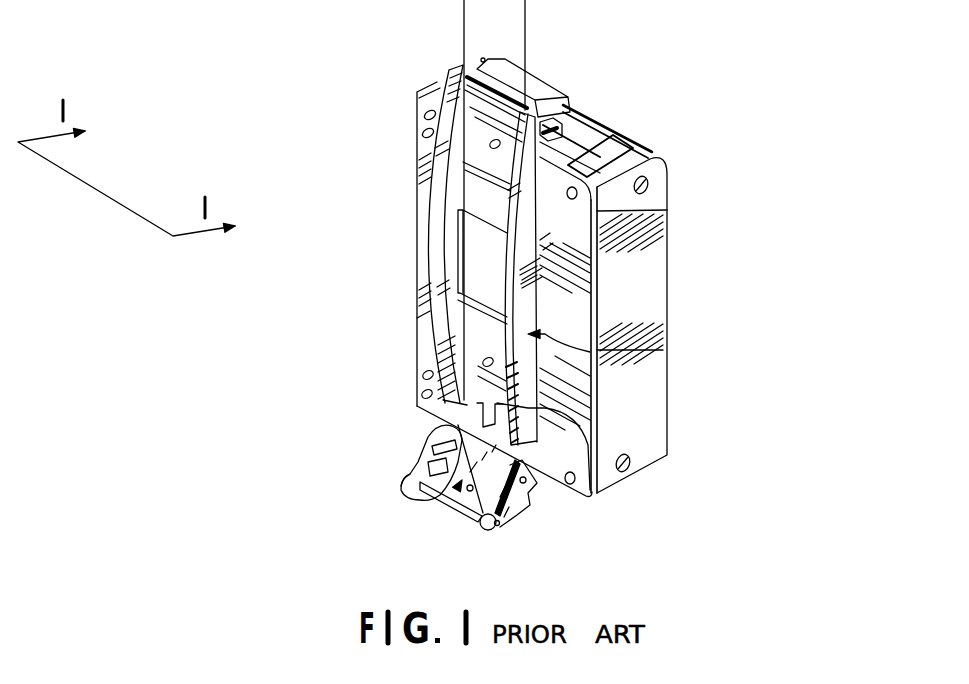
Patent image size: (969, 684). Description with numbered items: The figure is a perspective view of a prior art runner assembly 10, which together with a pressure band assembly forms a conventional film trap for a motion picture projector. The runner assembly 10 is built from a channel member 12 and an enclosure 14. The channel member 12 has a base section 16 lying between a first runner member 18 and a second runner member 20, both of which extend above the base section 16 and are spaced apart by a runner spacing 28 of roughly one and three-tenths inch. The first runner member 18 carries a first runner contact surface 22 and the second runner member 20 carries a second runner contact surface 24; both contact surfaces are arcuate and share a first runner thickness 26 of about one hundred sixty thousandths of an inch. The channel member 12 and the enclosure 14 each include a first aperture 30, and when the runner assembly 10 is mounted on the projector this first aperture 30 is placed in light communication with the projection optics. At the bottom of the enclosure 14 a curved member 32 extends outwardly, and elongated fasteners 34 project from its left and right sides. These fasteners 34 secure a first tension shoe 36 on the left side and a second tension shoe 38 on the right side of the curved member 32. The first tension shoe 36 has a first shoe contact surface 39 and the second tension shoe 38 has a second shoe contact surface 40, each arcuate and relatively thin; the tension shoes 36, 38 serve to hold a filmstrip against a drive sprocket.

The runner assembly 10 is at (770, 269).
The channel member 12 is at (663, 352).
The enclosure 14 is at (577, 138).
The base section 16 is at (417, 405).
The first runner member 18 is at (410, 158).
The second runner member 20 is at (527, 222).
The first runner contact surface 22 is at (435, 266).
The second runner contact surface 24 is at (510, 304).
The first runner thickness 26 is at (413, 313).
The runner spacing 28 is at (522, 27).
The first aperture 30 is at (475, 242).
The curved member 32 is at (453, 513).
The elongated fasteners 34 is at (428, 448).
The first tension shoe 36 is at (416, 496).
The second tension shoe 38 is at (520, 525).
The first shoe contact surface 39 is at (400, 488).
The second shoe contact surface 40 is at (482, 530).